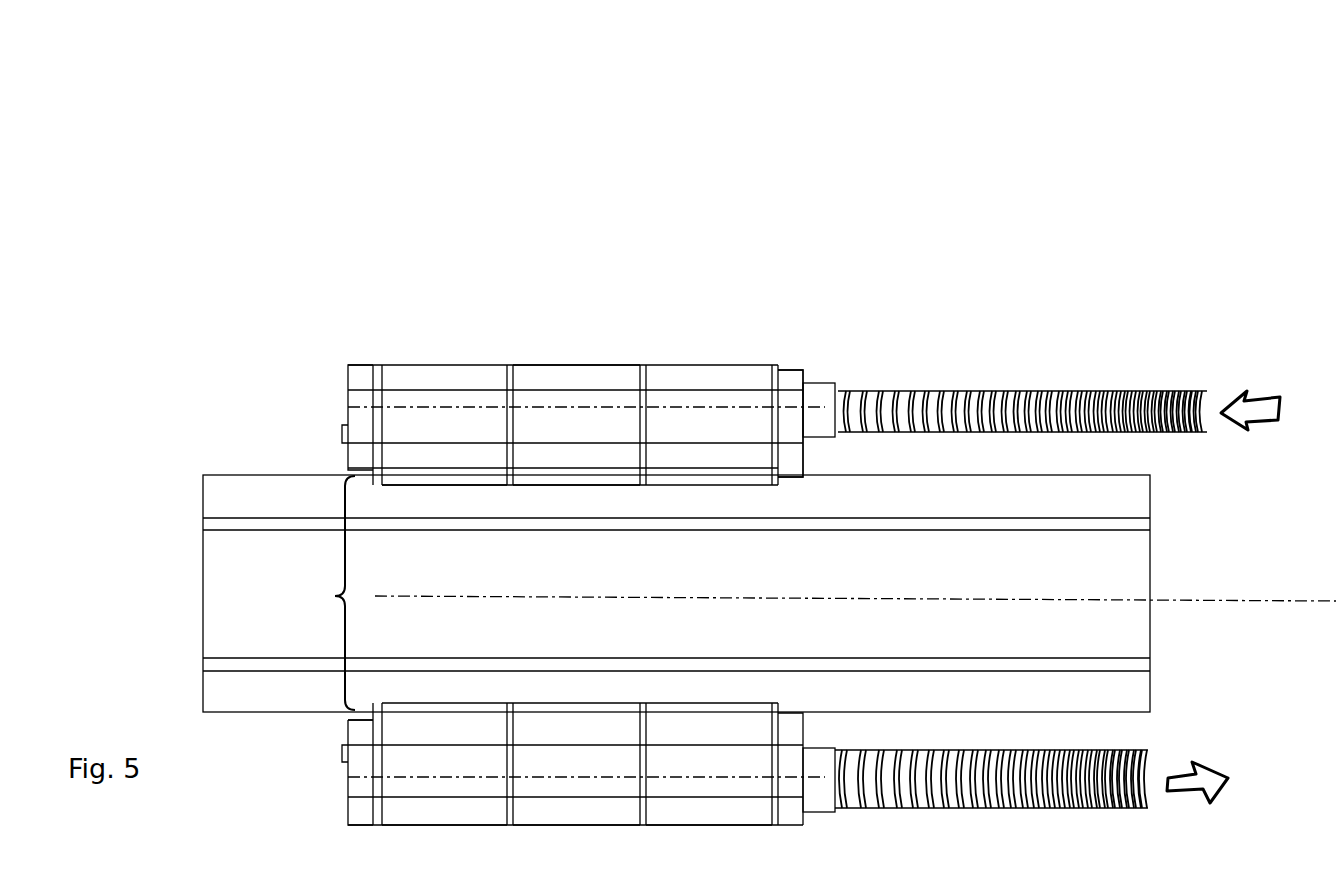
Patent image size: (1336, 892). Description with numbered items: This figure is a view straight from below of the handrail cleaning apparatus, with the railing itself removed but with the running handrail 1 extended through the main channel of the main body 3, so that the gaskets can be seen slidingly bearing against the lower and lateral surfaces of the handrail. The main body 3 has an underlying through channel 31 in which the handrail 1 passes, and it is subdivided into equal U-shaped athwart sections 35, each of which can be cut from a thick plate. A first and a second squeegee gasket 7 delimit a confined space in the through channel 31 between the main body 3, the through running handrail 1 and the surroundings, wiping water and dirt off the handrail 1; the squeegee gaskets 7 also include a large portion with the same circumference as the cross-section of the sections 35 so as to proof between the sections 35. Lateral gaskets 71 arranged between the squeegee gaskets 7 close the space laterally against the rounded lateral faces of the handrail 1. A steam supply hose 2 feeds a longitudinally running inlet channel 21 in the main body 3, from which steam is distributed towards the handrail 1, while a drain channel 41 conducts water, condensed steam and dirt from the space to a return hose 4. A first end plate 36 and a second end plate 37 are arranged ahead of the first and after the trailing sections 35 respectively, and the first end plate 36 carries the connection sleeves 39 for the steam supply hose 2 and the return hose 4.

The handrail 1 is at (1132, 688).
The steam supply hose 2 is at (1058, 398).
The main body 3 is at (637, 173).
The return hose 4 is at (1148, 765).
The squeegee gasket 7 is at (375, 372).
The inlet channel 21 is at (623, 403).
The through channel 31 is at (327, 593).
The U-shaped athwart sections 35 is at (435, 828).
The first end plate 36 is at (790, 380).
The second end plate 37 is at (358, 385).
The connection sleeves 39 is at (837, 385).
The drain channel 41 is at (413, 778).
The lateral gasket 71 is at (460, 477).